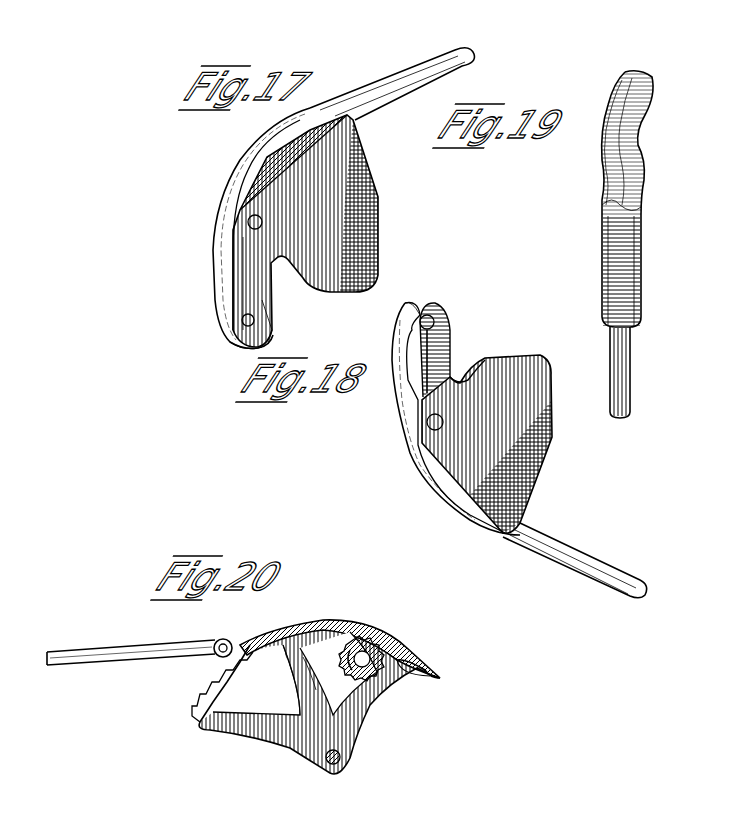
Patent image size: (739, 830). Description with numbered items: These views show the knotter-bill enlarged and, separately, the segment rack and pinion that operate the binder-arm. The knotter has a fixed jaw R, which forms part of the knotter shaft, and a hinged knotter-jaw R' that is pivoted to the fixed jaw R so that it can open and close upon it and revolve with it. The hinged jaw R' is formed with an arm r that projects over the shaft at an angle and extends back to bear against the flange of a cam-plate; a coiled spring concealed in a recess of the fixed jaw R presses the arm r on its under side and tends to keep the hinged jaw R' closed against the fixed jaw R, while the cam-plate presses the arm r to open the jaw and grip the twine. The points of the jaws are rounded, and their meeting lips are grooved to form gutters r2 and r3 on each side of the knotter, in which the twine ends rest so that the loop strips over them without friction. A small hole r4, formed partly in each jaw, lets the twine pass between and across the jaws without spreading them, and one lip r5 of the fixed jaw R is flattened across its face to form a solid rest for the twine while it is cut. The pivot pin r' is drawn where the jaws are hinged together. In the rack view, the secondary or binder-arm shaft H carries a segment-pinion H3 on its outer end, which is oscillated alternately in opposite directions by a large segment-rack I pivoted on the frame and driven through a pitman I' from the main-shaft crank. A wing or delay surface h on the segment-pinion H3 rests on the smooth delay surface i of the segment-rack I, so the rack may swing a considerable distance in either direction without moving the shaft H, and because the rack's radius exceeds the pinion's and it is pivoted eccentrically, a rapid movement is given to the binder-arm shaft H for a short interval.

In FIG. 17, the arm r is at (392, 82).
In FIG. 19, the arm r is at (626, 372).
In FIG. 18, the arm r is at (575, 560).
In FIG. 17, the fixed jaw R is at (305, 231).
In FIG. 19, the fixed jaw R is at (628, 271).
In FIG. 18, the fixed jaw R is at (487, 444).
In FIG. 17, the knotter-jaw R' is at (250, 228).
In FIG. 19, the knotter-jaw R' is at (627, 143).
In FIG. 18, the knotter-jaw R' is at (445, 419).
In FIG. 17, the pivot pin r' is at (225, 220).
In FIG. 18, the pivot pin r' is at (435, 422).
In FIG. 17, the gutter r2 is at (243, 297).
In FIG. 18, the gutter r3 is at (441, 312).
In FIG. 17, the small hole r4 is at (232, 346).
In FIG. 18, the small hole r4 is at (428, 303).
In FIG. 17, the lip r5 is at (273, 326).
In FIG. 20, the segment-rack I is at (327, 639).
In FIG. 20, the pitman I' is at (131, 658).
In FIG. 20, the wing or delay surface h is at (405, 651).
In FIG. 20, the secondary shaft H is at (328, 764).
In FIG. 20, the segment-pinion H3 is at (346, 658).
In FIG. 20, the smooth or delay surface i is at (293, 676).